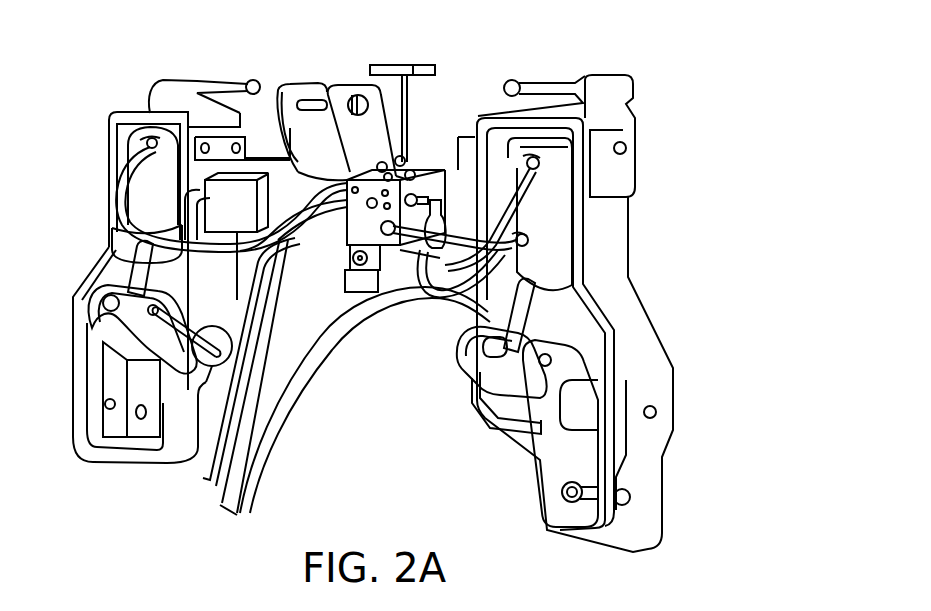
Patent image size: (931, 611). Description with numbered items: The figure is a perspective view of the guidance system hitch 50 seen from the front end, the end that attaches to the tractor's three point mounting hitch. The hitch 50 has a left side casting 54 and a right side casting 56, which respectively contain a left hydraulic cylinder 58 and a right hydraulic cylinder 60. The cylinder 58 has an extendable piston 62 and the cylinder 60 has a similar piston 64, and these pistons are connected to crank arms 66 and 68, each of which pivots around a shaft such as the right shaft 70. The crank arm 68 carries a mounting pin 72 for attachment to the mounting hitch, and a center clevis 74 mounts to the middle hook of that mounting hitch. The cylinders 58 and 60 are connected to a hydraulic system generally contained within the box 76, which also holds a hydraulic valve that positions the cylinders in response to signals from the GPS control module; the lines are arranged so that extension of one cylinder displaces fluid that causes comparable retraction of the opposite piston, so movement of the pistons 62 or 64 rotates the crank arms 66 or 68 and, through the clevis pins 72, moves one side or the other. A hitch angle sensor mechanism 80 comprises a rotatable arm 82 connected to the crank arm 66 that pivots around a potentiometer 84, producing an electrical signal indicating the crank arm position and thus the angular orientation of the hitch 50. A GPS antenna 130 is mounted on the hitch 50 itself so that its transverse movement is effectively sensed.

The guidance system hitch 50 is at (462, 60).
The left side casting 54 is at (130, 112).
The right side casting 56 is at (640, 122).
The left hydraulic cylinder 58 is at (150, 183).
The right hydraulic cylinder 60 is at (548, 215).
The extendable piston 62 is at (135, 270).
The piston 64 is at (510, 320).
The crank arm 66 is at (105, 340).
The crank arm 68 is at (575, 337).
The right shaft 70 is at (656, 411).
The mounting pin 72 is at (105, 404).
The center clevis 74 is at (340, 58).
The box 76 is at (407, 163).
The hitch angle sensor mechanism 80 is at (197, 378).
The rotatable arm 82 is at (167, 310).
The potentiometer 84 is at (215, 340).
The GPS antenna 130 is at (420, 65).